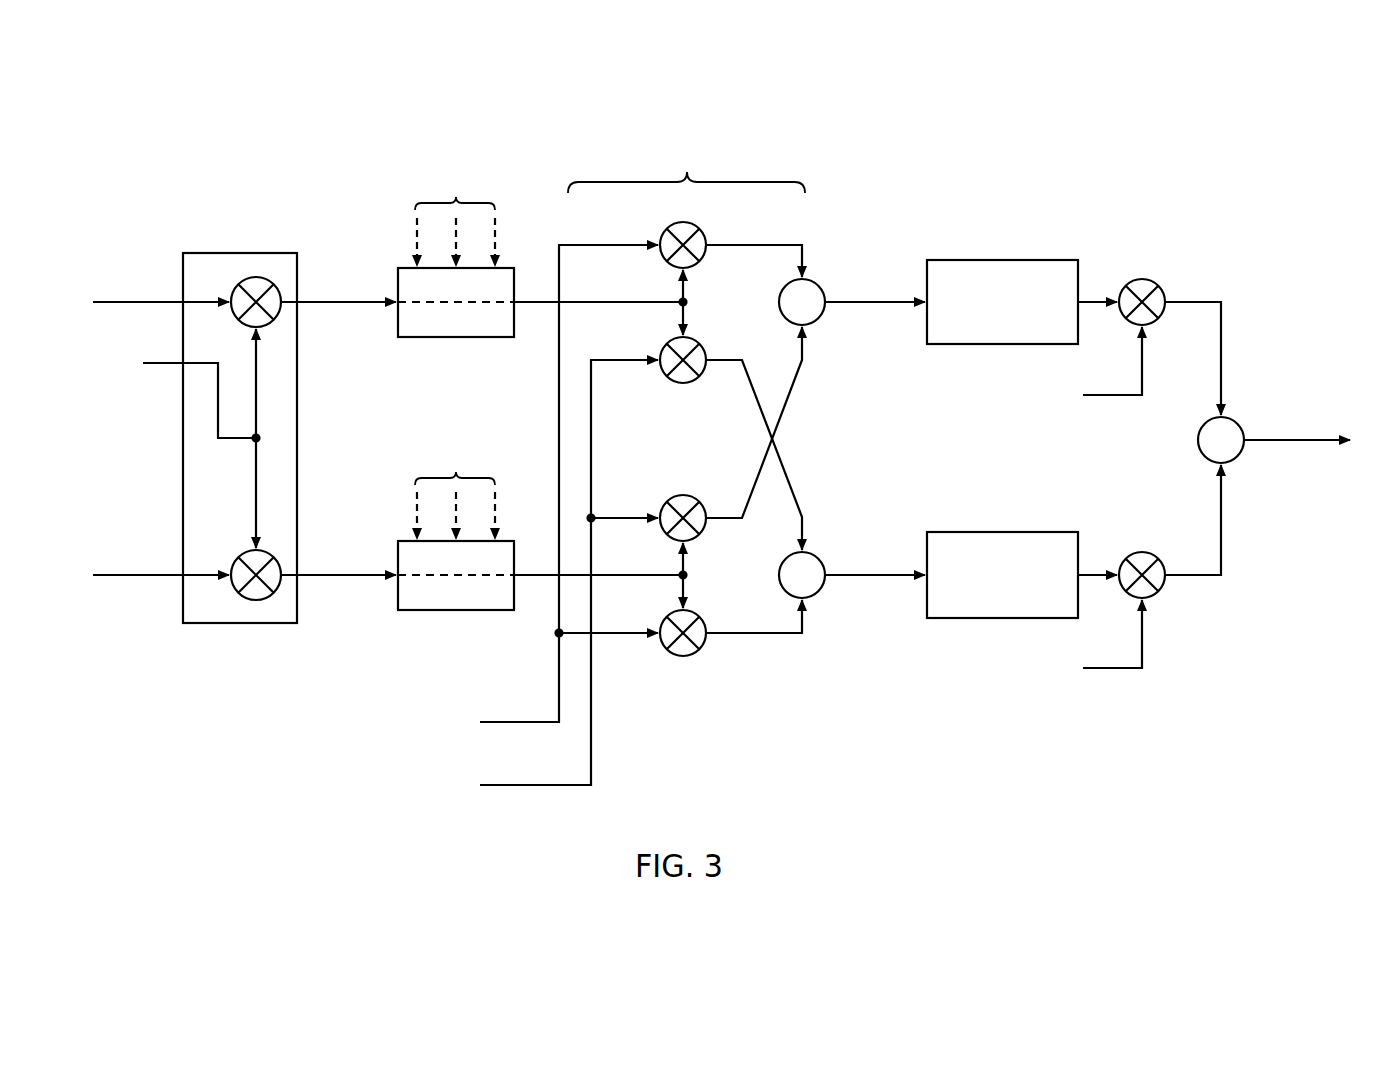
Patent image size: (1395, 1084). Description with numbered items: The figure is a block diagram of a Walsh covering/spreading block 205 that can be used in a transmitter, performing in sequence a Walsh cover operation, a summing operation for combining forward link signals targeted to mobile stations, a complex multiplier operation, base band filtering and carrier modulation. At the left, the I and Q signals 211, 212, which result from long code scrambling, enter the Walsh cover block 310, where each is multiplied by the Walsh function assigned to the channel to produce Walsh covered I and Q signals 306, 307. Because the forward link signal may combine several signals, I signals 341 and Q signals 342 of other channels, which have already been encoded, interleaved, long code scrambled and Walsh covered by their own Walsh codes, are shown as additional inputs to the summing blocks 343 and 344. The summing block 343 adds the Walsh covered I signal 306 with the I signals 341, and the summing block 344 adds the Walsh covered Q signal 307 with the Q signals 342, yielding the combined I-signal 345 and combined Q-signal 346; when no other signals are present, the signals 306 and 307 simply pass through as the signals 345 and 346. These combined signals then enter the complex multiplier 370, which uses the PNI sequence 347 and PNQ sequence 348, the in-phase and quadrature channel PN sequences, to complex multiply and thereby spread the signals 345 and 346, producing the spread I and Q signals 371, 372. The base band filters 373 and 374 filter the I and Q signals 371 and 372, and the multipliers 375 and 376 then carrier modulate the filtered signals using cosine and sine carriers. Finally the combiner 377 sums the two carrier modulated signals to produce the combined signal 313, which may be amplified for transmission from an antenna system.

The Walsh covering/spreading block 205 is at (1246, 198).
The I signal 211 is at (167, 300).
The Q signal 212 is at (167, 573).
The Walsh cover block 310 is at (228, 253).
The Walsh covered I signal 306 is at (316, 305).
The Walsh covered Q signal 307 is at (316, 578).
The I signals of other channels 341 is at (478, 204).
The Q signals of other channels 342 is at (478, 479).
The summing block 343 is at (446, 337).
The summing block 344 is at (446, 610).
The combined I-signal 345 is at (608, 303).
The combined Q-signal 346 is at (608, 576).
The PNI sequence 347 is at (497, 724).
The PNQ sequence 348 is at (510, 787).
The complex multiplier 370 is at (722, 183).
The I signal 371 is at (840, 305).
The Q signal 372 is at (840, 578).
The base band filter 373 is at (1012, 260).
The base band filter 374 is at (1012, 532).
The multiplier 375 is at (1142, 278).
The multiplier 376 is at (1142, 551).
The combiner 377 is at (1238, 420).
The combined signal 313 is at (1277, 443).